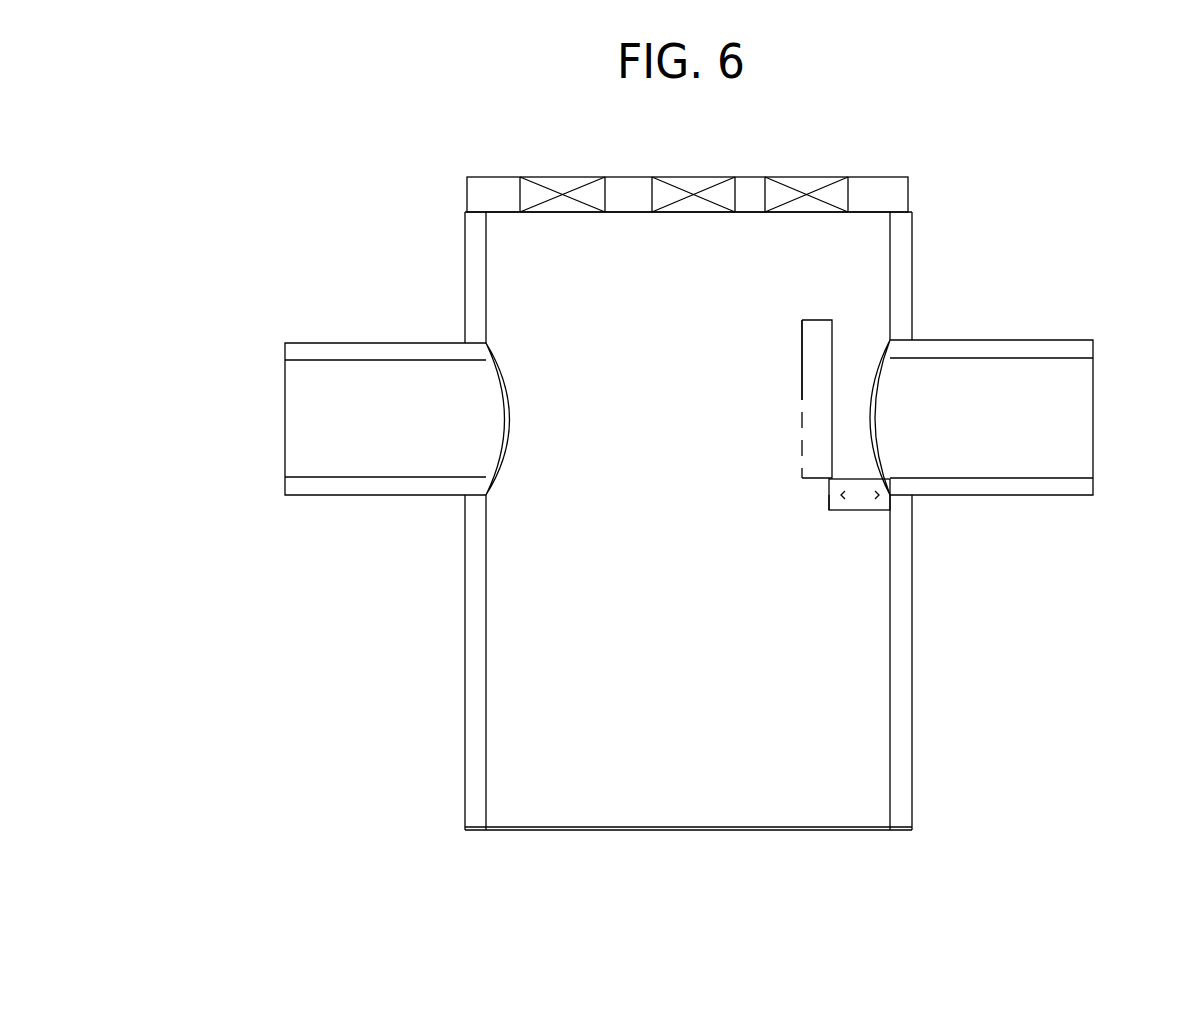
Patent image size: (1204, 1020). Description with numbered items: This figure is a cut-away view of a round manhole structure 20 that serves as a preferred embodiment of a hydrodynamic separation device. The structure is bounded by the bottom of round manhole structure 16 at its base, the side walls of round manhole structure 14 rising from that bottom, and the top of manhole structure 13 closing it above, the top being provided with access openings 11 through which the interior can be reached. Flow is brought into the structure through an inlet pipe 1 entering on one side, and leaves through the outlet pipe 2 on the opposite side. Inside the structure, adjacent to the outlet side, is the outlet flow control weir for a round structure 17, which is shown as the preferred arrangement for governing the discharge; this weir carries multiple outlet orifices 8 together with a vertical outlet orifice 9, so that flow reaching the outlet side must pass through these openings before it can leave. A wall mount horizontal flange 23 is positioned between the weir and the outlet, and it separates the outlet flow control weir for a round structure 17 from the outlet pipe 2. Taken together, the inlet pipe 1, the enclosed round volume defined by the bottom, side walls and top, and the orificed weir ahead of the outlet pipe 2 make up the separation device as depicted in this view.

The inlet pipe 1 is at (303, 445).
The outlet pipe 2 is at (1055, 378).
The outlet orifices 8 is at (802, 402).
The vertical outlet orifice 9 is at (858, 483).
The access openings 11 is at (805, 190).
The top of manhole structure 13 is at (505, 183).
The side walls of round manhole structure 14 is at (476, 673).
The bottom of round manhole structure 16 is at (460, 840).
The outlet flow control weir for a round structure 17 is at (798, 349).
The round manhole structure 20 is at (655, 592).
The wall mount horizontal flange 23 is at (842, 502).